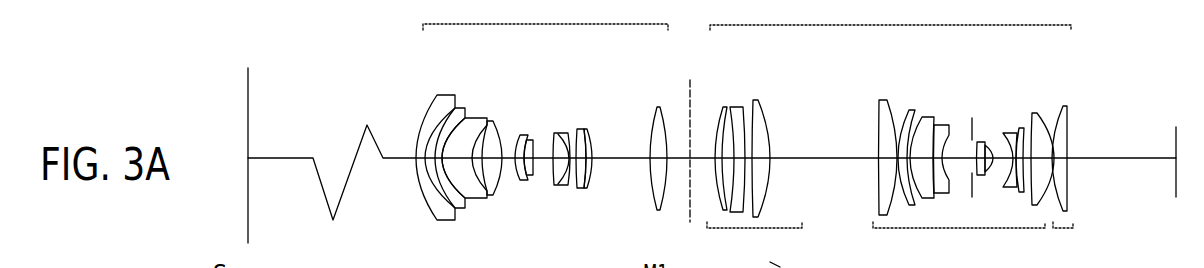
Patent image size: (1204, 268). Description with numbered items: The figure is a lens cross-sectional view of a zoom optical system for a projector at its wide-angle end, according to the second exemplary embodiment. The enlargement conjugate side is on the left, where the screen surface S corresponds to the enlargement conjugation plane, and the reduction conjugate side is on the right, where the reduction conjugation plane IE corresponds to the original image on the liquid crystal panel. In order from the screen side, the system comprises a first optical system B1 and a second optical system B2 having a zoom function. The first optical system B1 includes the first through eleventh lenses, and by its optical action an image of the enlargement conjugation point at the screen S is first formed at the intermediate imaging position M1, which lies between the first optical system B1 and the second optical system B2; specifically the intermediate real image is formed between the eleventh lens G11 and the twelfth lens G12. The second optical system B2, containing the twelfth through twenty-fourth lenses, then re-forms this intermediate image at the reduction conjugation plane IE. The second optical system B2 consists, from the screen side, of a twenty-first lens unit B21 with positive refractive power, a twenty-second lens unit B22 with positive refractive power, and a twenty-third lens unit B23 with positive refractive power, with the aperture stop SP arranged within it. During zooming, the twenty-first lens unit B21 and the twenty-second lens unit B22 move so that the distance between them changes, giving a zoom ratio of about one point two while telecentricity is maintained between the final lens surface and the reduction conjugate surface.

The screen surface S is at (247, 90).
The first optical system B1 is at (542, 110).
The 11th lens G11 is at (657, 120).
The intermediate imaging position M1 is at (690, 90).
The second optical system B2 is at (893, 132).
The 21th lens unit B21 is at (754, 159).
The 12th lens G12 is at (723, 108).
The 22th lens unit B22 is at (963, 171).
The aperture stop SP is at (972, 117).
The 23th lens unit B23 is at (1062, 185).
The reduction conjugation plane IE is at (1175, 135).